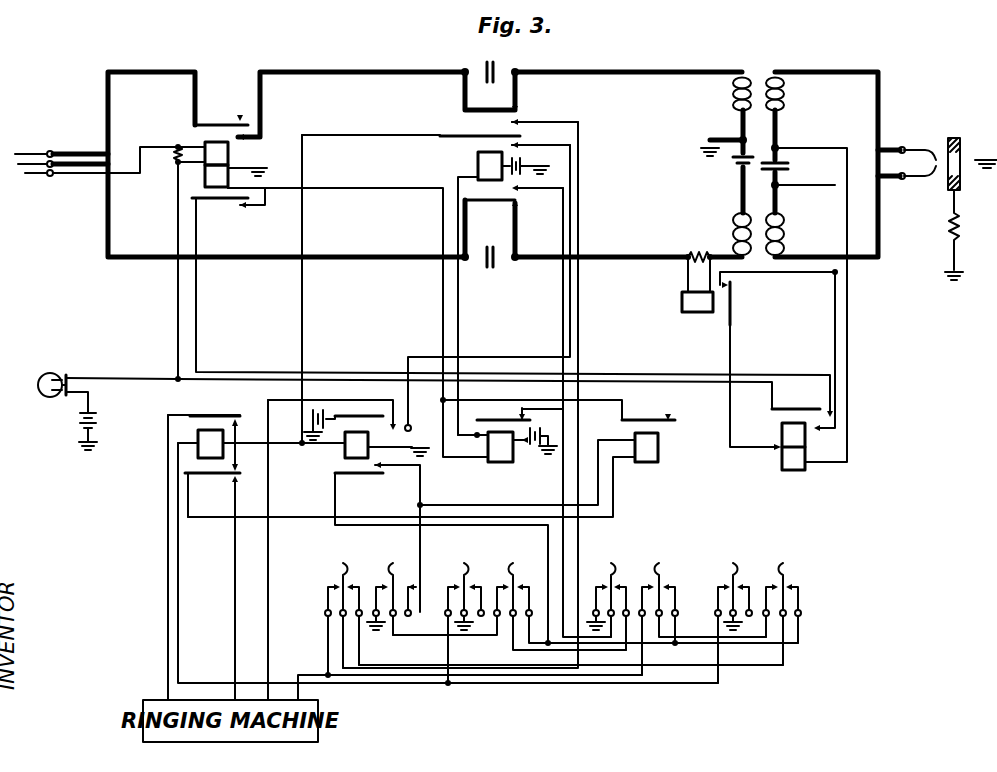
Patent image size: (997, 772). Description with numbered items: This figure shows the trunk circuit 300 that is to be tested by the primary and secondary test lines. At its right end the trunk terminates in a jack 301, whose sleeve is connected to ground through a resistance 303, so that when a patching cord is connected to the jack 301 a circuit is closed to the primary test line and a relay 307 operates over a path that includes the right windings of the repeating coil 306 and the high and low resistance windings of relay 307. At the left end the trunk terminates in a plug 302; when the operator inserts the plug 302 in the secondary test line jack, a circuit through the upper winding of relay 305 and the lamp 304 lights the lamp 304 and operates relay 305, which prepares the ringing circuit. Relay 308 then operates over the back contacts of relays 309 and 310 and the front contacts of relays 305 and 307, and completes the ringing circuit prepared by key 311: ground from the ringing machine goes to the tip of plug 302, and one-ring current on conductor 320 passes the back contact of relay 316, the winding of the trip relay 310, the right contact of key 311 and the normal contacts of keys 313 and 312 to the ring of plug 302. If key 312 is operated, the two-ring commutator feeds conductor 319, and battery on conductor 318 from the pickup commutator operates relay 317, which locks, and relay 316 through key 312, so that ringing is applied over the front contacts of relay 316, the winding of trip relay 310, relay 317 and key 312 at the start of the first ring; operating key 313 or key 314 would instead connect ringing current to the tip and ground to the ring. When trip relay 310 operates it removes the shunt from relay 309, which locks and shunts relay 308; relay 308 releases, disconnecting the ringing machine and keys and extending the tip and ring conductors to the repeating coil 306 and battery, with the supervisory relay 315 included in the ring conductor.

The trunk circuit 300 is at (493, 154).
The jack 301 is at (938, 150).
The plug 302 is at (48, 149).
The resistance 303 is at (950, 228).
The lamp 304 is at (72, 363).
The relay 305 is at (228, 148).
The repeating coil 306 is at (755, 82).
The relay 307 is at (798, 470).
The relay 308 is at (478, 163).
The relay 309 is at (492, 462).
The trip relay 310 is at (647, 462).
The key 311 is at (366, 584).
The key 312 is at (487, 584).
The key 313 is at (634, 584).
The key 314 is at (755, 584).
The supervisory relay 315 is at (696, 312).
The relay 316 is at (212, 430).
The relay 317 is at (345, 455).
The conductor 318 is at (268, 574).
The conductor 319 is at (168, 590).
The conductor 320 is at (235, 602).